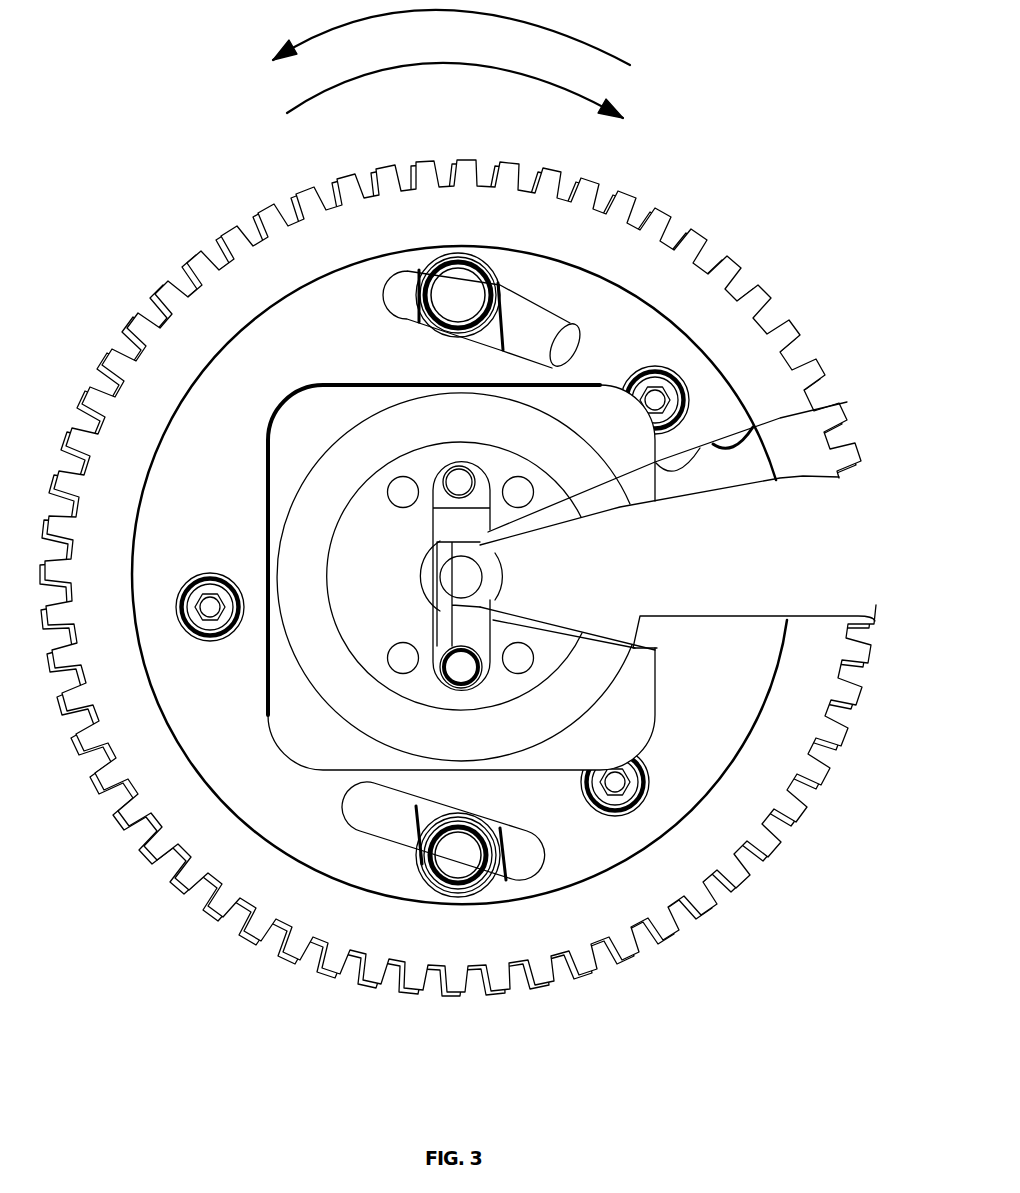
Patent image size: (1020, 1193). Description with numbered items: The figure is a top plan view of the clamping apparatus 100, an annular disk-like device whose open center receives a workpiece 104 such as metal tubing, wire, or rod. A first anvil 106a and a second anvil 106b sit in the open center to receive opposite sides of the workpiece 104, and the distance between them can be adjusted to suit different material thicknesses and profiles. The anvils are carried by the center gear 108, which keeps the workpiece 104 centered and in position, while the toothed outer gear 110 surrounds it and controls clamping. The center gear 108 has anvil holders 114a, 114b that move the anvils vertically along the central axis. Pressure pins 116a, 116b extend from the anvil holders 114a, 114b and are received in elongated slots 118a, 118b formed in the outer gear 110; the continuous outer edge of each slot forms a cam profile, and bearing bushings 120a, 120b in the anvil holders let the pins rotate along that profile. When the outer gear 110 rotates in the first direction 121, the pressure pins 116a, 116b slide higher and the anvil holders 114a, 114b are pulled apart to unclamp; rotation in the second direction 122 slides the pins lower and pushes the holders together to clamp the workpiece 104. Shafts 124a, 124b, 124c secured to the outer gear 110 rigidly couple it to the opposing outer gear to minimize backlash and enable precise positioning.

The clamping apparatus 100 is at (461, 546).
The workpiece 104 is at (458, 577).
The first anvil 106a is at (487, 534).
The second anvil 106b is at (485, 604).
The center gear 108 is at (803, 478).
The outer gear 110 is at (787, 747).
The anvil holder 114a is at (505, 325).
The anvil holder 114b is at (417, 830).
The pressure pin 116a is at (460, 290).
The pressure pin 116b is at (458, 862).
The slot 118a is at (372, 297).
The slot 118b is at (345, 828).
The bearing bushing 120a is at (432, 272).
The bearing bushing 120b is at (430, 868).
The first direction 121 is at (605, 107).
The second direction 122 is at (343, 23).
The shaft 124a is at (660, 385).
The shaft 124b is at (633, 797).
The shaft 124c is at (205, 607).